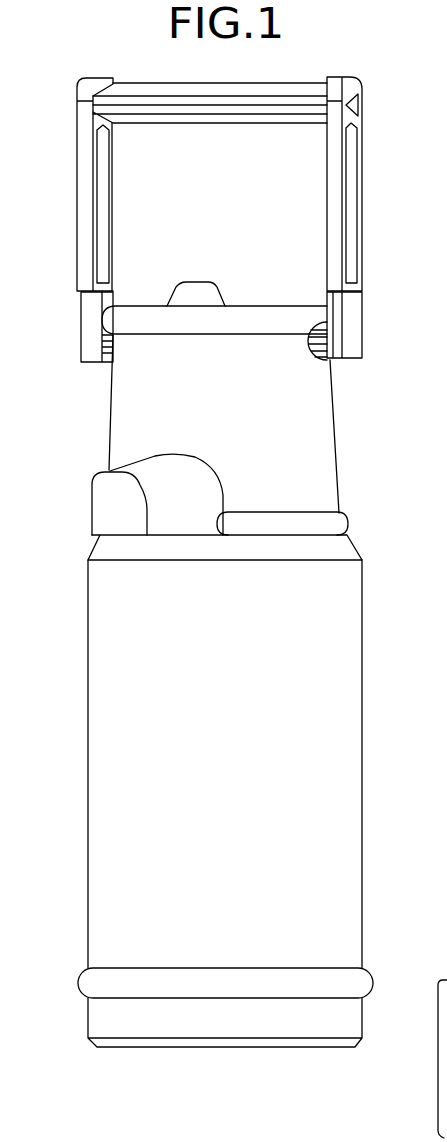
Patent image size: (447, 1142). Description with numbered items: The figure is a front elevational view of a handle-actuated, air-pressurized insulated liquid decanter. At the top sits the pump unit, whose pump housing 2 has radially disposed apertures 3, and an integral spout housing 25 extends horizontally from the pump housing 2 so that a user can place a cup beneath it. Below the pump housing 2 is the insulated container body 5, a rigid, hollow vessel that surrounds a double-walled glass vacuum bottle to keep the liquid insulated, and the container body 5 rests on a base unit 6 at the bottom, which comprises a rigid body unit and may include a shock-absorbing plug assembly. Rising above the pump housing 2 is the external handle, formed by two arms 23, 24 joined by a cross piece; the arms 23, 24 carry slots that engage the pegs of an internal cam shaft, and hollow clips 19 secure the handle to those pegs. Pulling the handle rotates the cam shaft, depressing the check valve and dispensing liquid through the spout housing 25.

The pump housing 2 is at (337, 421).
The radially disposed apertures 3 is at (446, 709).
The insulated container body 5 is at (362, 799).
The base unit 6 is at (362, 1015).
The hollow clips 19 is at (81, 322).
The arm 23 is at (77, 246).
The arm 24 is at (362, 191).
The integral spout housing 25 is at (92, 503).